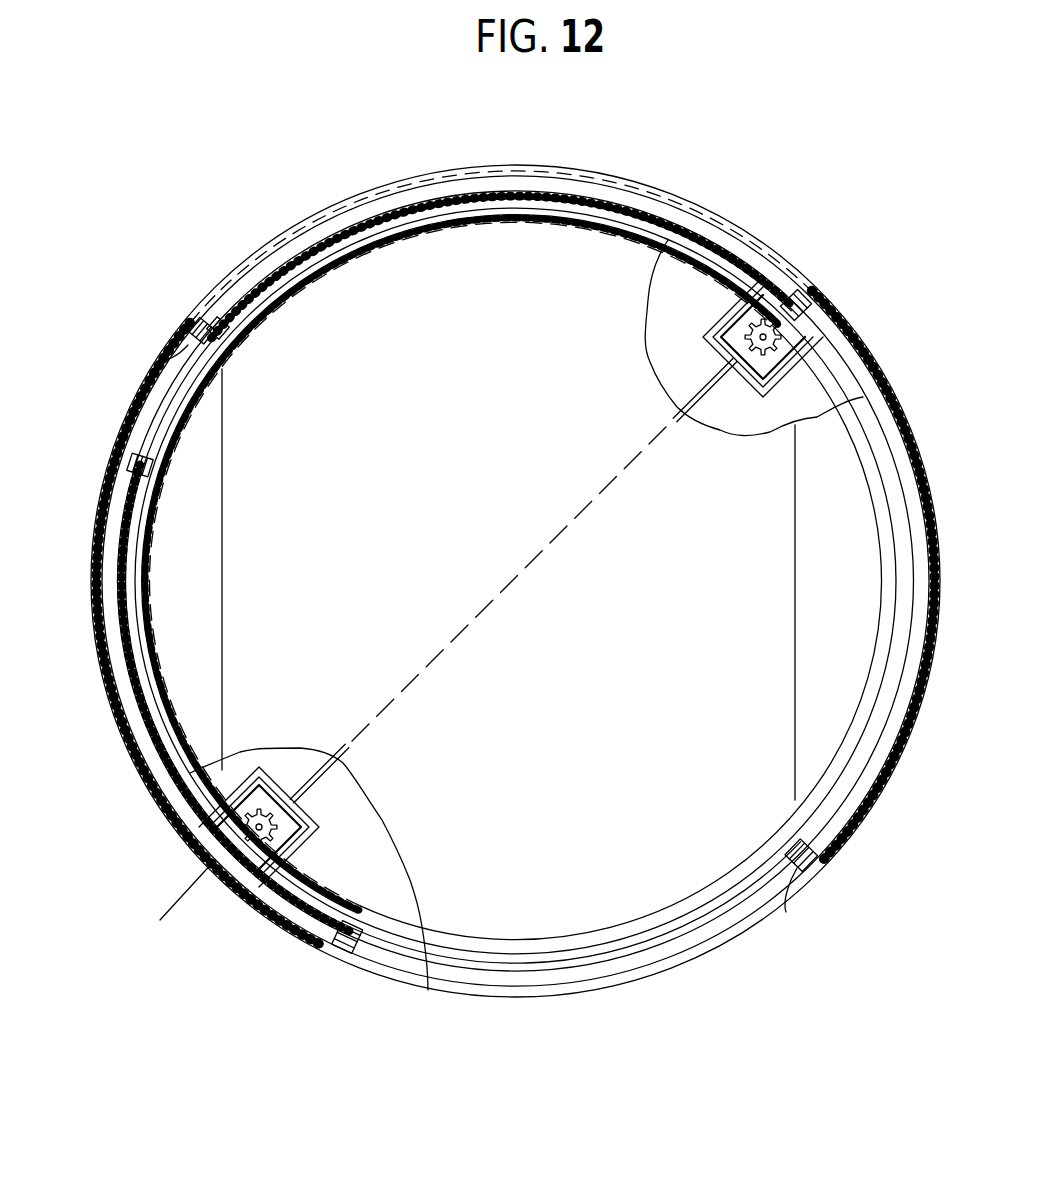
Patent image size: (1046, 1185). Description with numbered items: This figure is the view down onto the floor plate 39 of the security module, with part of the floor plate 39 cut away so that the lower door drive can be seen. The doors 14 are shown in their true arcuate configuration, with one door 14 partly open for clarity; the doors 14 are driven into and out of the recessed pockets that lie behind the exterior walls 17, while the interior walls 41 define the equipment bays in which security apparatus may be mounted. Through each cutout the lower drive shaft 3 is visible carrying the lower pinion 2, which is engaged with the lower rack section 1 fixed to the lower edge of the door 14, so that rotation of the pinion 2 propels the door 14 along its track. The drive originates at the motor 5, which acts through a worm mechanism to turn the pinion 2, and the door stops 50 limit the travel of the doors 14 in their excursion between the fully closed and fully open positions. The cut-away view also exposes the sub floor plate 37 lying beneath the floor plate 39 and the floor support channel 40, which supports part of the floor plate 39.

The rack 1 is at (150, 637).
The pinion 2 is at (787, 338).
The lower drive shaft 3 is at (764, 333).
The motor 5 is at (306, 772).
The door 14 is at (410, 205).
The exterior wall 17 is at (148, 402).
The sub floor plate 37 is at (680, 310).
The floor plate 39 is at (508, 503).
The floor support channel 40 is at (350, 782).
The interior wall 41 is at (793, 655).
The door stop 50 is at (165, 358).